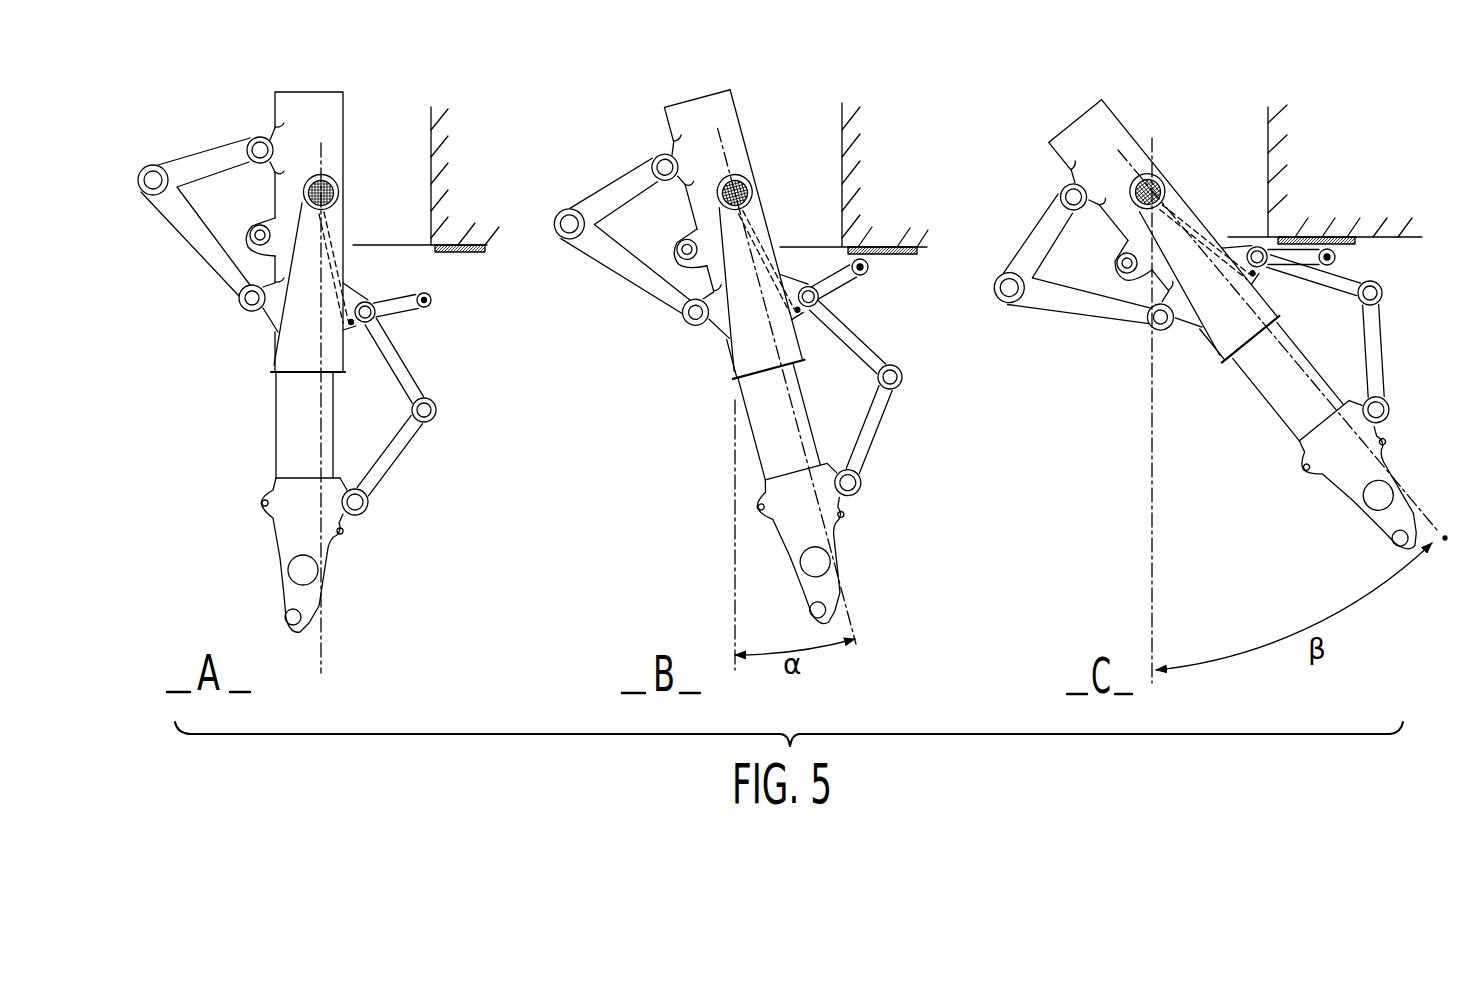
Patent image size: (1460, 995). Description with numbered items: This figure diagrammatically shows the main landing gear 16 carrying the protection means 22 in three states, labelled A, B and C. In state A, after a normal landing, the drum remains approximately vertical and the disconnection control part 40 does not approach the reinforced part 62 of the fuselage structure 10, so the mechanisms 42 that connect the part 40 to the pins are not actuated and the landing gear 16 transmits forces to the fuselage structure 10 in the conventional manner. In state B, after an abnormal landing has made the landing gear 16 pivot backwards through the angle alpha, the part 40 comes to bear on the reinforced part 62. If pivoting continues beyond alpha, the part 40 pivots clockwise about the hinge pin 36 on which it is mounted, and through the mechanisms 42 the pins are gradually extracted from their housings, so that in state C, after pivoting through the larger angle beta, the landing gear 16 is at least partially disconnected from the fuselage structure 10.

The fuselage structure 10 is at (430, 127).
The main landing gear 16 is at (246, 486).
The protection means 22 is at (297, 105).
The hinge pin 36 is at (820, 307).
The disconnection control part 40 is at (427, 308).
The mechanisms 42 is at (337, 240).
The reinforced part 62 is at (473, 252).